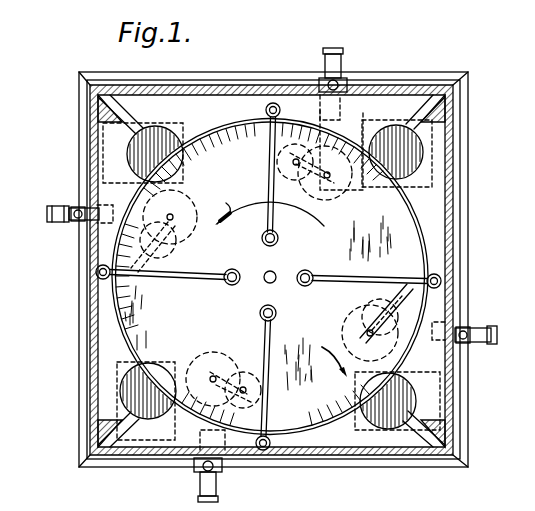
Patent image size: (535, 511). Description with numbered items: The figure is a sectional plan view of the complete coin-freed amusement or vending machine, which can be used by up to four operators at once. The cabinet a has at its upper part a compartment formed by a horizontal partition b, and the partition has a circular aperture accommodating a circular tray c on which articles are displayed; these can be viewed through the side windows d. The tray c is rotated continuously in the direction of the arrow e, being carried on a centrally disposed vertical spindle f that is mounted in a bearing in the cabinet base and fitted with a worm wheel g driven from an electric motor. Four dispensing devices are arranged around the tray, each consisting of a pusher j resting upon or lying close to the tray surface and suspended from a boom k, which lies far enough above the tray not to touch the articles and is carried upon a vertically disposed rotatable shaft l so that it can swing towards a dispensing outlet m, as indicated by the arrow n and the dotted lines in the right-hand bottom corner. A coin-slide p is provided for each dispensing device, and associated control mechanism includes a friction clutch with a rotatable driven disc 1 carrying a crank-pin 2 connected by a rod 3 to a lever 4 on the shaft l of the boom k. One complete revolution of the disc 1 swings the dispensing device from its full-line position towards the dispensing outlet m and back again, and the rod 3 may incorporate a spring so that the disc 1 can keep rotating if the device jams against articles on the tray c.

The cabinet a is at (65, 318).
The horizontal partition b is at (107, 363).
The circular tray c is at (323, 405).
The side windows d is at (200, 96).
The arrow e is at (269, 206).
The vertical spindle f is at (276, 272).
The worm wheel g is at (312, 274).
The pusher j is at (234, 285).
The boom k is at (165, 278).
The rotatable shaft l is at (275, 103).
The dispensing outlet m is at (145, 408).
The arrow n is at (334, 369).
The coin-slide p is at (340, 63).
The driven disc 1 is at (269, 276).
The crank-pin 2 is at (305, 184).
The rod 3 is at (271, 150).
The lever 4 is at (267, 106).